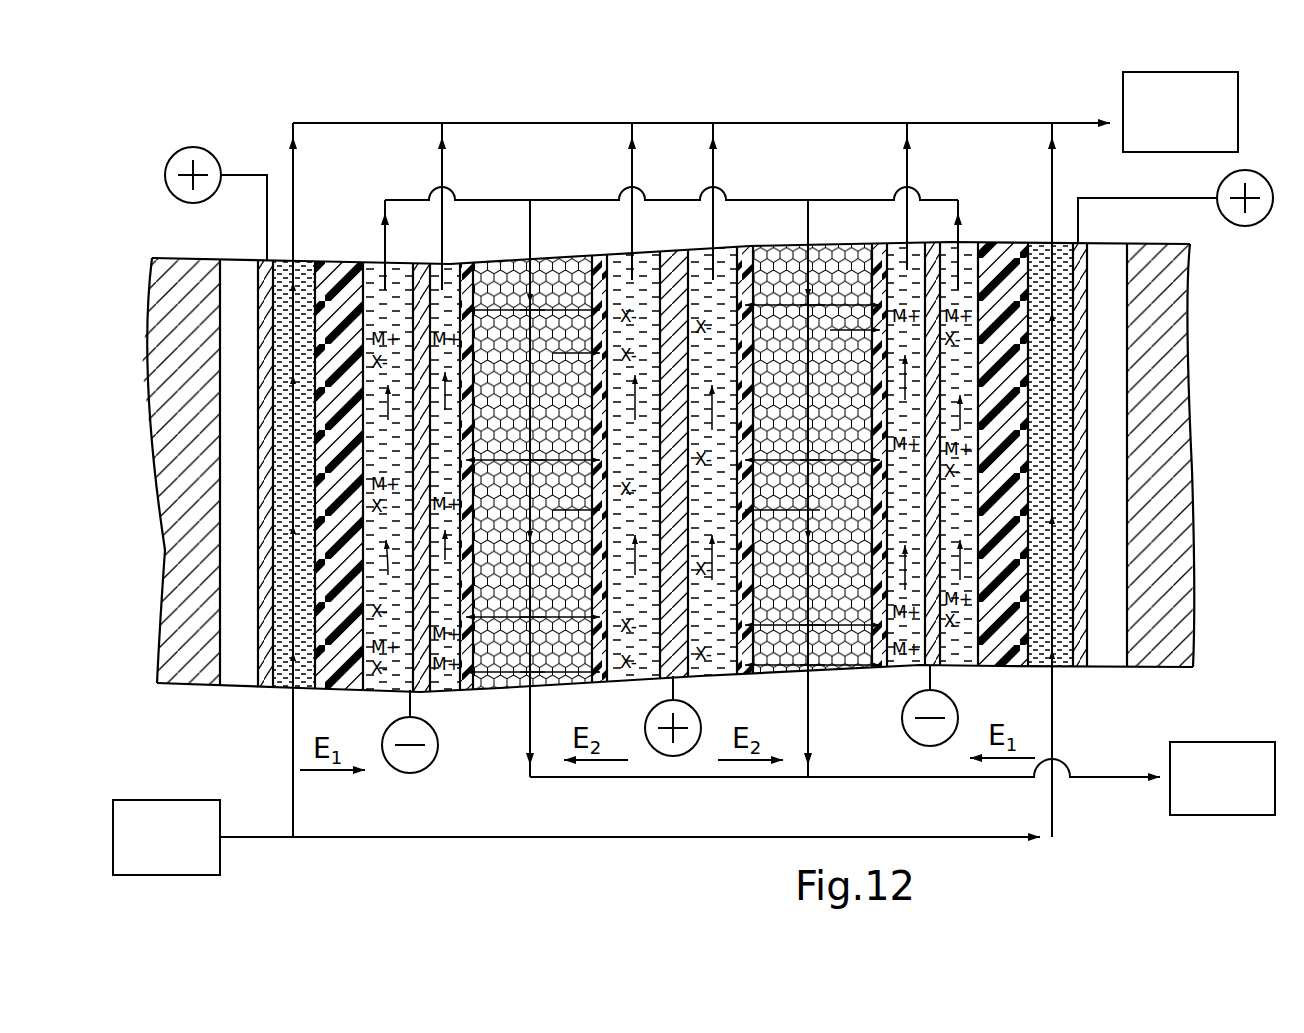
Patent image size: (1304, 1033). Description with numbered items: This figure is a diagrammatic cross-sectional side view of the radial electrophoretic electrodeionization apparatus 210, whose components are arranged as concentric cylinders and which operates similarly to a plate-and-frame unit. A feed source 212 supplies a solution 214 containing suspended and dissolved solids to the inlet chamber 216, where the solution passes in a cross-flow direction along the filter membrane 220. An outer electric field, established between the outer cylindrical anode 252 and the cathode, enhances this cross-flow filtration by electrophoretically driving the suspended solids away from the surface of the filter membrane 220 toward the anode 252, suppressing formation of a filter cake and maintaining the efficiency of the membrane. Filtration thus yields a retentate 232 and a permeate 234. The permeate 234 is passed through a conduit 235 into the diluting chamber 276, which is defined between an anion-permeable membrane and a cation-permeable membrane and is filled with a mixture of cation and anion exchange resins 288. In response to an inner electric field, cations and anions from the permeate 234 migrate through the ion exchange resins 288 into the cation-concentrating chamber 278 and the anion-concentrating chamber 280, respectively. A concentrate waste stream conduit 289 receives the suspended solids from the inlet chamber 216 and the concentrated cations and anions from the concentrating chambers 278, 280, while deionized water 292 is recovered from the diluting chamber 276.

The electrophoretic electrodeionization apparatus 210 is at (943, 92).
The feed source 212 is at (160, 800).
The solution 214 is at (293, 723).
The inlet chamber 216 is at (270, 517).
The filter membrane 220 is at (358, 260).
The retentate 232 is at (282, 300).
The permeate 234 is at (388, 690).
The conduit 235 is at (498, 198).
The outer cylindrical anode 252 is at (267, 328).
The diluting chamber 276 is at (549, 392).
The cation-concentrating chamber 278 is at (452, 265).
The anion-concentrating chamber 280 is at (643, 253).
The ion exchange resins 288 is at (520, 680).
The concentrate waste stream conduit 289 is at (368, 122).
The deionized water 292 is at (1217, 738).